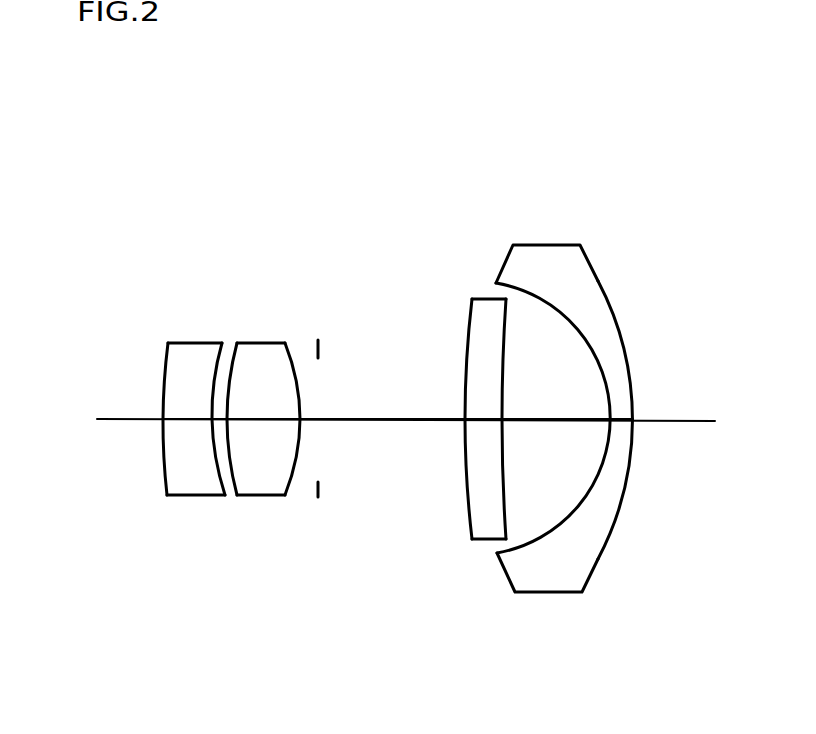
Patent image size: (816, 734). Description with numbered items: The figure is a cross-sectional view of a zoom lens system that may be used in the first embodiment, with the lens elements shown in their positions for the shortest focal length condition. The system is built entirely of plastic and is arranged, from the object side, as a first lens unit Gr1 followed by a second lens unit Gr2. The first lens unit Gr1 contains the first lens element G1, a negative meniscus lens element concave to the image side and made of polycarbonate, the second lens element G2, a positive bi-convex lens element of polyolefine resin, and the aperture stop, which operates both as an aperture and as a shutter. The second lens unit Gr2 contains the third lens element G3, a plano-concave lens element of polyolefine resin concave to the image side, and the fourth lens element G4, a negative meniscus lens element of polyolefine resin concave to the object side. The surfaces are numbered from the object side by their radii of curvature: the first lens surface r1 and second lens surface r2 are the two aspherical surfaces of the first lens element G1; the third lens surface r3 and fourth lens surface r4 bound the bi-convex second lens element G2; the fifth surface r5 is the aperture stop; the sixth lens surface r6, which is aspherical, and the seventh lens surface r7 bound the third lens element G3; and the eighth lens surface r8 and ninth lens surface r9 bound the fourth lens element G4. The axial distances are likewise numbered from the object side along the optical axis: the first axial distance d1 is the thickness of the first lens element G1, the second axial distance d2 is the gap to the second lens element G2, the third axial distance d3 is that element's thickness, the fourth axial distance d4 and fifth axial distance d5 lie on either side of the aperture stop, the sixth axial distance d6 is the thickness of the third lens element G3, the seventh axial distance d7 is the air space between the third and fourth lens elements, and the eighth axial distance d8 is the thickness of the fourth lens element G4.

The first lens unit Gr1 is at (320, 222).
The second lens unit Gr2 is at (625, 140).
The first lens element G1 is at (192, 347).
The second lens element G2 is at (263, 347).
The third lens element G3 is at (485, 310).
The fourth lens element G4 is at (557, 255).
The first lens surface r1 is at (168, 497).
The second lens surface r2 is at (224, 497).
The third lens surface r3 is at (238, 497).
The fourth lens surface r4 is at (286, 497).
The fifth surface r5 is at (319, 499).
The sixth lens surface r6 is at (470, 510).
The seventh lens surface r7 is at (502, 523).
The eighth lens surface r8 is at (537, 533).
The ninth lens surface r9 is at (598, 575).
The first axial distance d1 is at (187, 402).
The second axial distance d2 is at (218, 427).
The third axial distance d3 is at (263, 402).
The fourth axial distance d4 is at (324, 402).
The fifth axial distance d5 is at (391, 406).
The sixth axial distance d6 is at (487, 422).
The seventh axial distance d7 is at (551, 406).
The eighth axial distance d8 is at (618, 422).